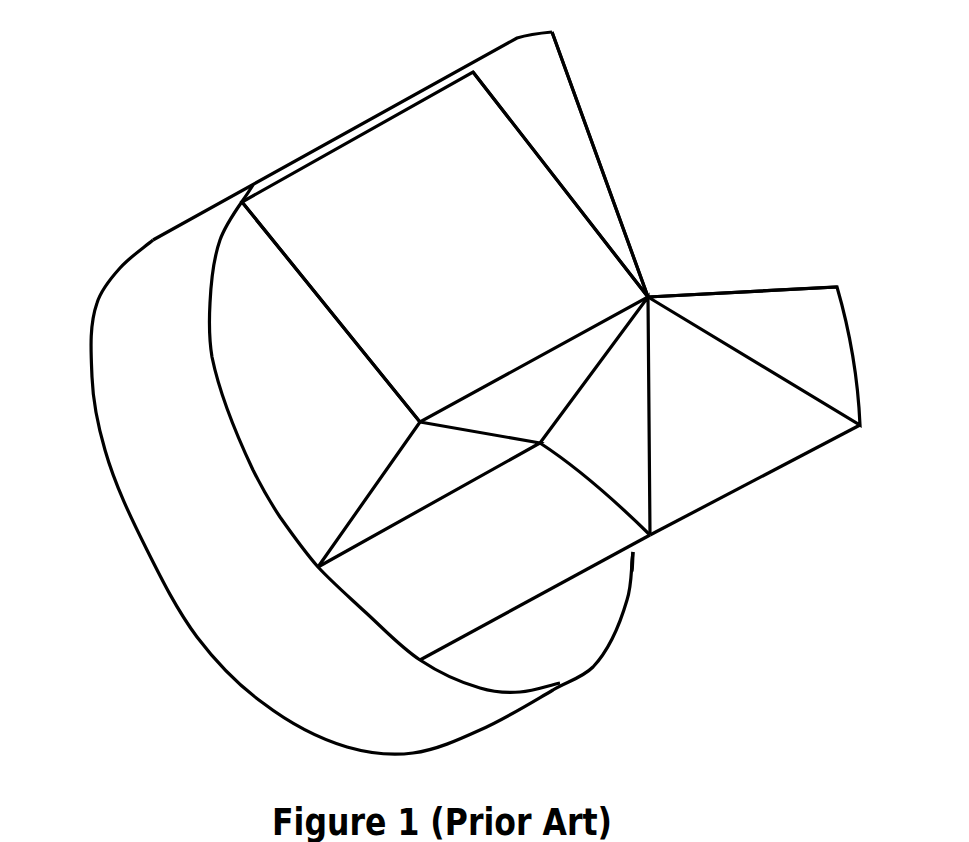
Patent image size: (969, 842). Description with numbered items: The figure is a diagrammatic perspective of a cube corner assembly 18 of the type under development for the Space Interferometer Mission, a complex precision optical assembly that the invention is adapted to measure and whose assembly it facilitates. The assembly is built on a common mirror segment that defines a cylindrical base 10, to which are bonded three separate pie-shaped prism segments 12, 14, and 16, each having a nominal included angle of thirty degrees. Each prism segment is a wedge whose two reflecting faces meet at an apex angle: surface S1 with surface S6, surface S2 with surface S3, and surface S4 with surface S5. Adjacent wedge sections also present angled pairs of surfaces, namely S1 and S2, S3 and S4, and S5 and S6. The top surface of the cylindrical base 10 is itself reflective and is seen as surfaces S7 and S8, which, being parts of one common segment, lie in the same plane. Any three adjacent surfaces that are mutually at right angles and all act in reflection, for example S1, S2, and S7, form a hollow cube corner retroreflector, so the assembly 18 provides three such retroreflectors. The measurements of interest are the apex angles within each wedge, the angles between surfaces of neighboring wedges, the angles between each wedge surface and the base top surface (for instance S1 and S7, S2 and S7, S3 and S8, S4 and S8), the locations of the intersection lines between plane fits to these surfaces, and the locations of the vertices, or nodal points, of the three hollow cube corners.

The cylindrical base 10 is at (130, 325).
The prism segment 12 is at (573, 123).
The prism segment 14 is at (635, 365).
The prism segment 16 is at (767, 317).
The cube corner assembly 18 is at (645, 640).
The wedge section surface S1 is at (445, 247).
The wedge section surface S2 is at (429, 490).
The wedge section surface S3 is at (652, 468).
The wedge section surface S4 is at (765, 412).
The wedge section surface S5 is at (803, 280).
The wedge section surface S6 is at (570, 70).
The base top surface S7 is at (331, 384).
The base top surface S8 is at (535, 597).